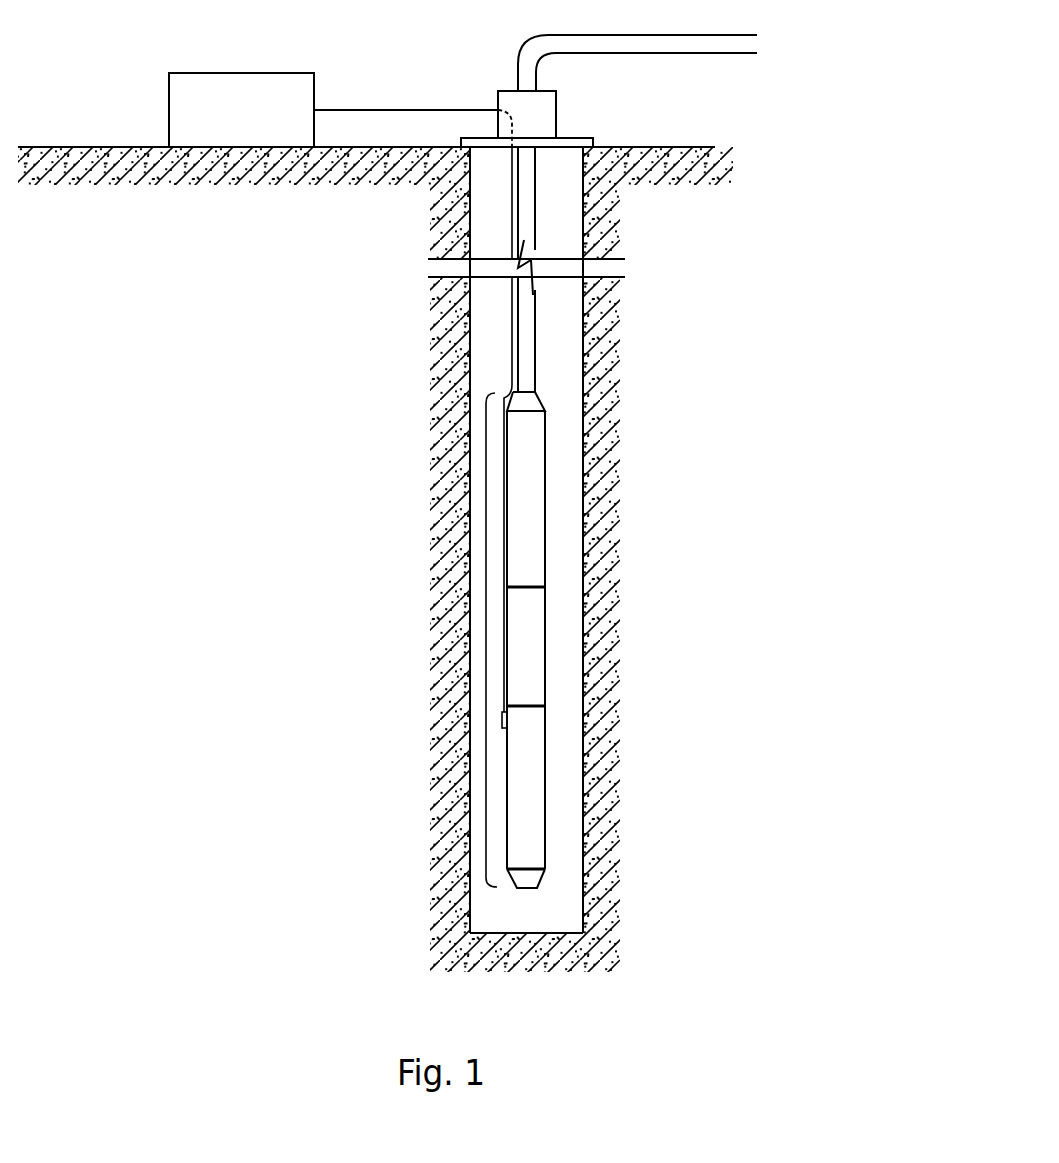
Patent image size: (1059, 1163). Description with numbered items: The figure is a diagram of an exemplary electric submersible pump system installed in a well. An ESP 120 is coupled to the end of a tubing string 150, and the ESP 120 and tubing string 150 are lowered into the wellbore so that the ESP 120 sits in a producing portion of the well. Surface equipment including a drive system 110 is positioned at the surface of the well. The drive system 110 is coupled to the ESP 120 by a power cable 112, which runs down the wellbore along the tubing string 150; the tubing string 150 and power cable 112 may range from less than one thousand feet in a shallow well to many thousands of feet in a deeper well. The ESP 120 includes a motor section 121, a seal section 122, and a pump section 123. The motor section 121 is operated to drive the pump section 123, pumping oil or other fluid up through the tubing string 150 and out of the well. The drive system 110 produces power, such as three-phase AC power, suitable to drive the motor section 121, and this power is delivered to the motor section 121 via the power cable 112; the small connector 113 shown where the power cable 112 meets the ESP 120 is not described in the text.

The drive system 110 is at (243, 73).
The power cable 112 is at (403, 110).
The cable connector 113 is at (502, 722).
The ESP 120 is at (524, 640).
The motor section 121 is at (545, 812).
The seal section 122 is at (545, 637).
The pump section 123 is at (542, 487).
The tubing string 150 is at (537, 342).